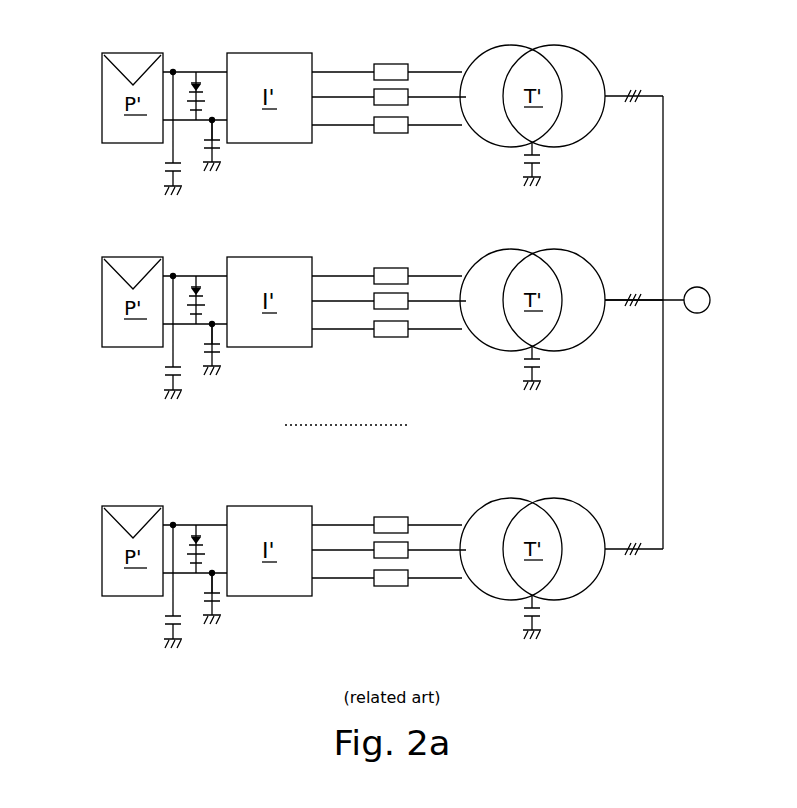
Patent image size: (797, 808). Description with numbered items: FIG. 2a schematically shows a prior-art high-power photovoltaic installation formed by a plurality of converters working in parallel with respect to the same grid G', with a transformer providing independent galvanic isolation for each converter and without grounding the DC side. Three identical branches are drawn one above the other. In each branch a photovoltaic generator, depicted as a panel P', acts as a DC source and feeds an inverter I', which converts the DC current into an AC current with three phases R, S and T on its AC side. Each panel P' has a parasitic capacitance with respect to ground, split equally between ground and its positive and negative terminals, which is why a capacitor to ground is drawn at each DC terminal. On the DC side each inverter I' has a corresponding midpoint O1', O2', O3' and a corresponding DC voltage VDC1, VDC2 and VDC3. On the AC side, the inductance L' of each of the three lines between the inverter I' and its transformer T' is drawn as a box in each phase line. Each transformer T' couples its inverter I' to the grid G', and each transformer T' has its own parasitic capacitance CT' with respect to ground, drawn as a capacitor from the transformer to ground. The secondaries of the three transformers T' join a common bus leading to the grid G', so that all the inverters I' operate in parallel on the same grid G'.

The panel P' is at (132, 324).
The inverter I' is at (269, 324).
The inductance L' is at (406, 296).
The transformer T' is at (532, 322).
The parasitic capacitance of the transformer CT' is at (563, 390).
The midpoint O1' is at (184, 67).
The midpoint O2' is at (184, 271).
The midpoint O3' is at (184, 520).
The DC voltage VDC1 is at (221, 108).
The DC voltage VDC2 is at (234, 285).
The DC voltage VDC3 is at (234, 534).
The grid G' is at (668, 280).